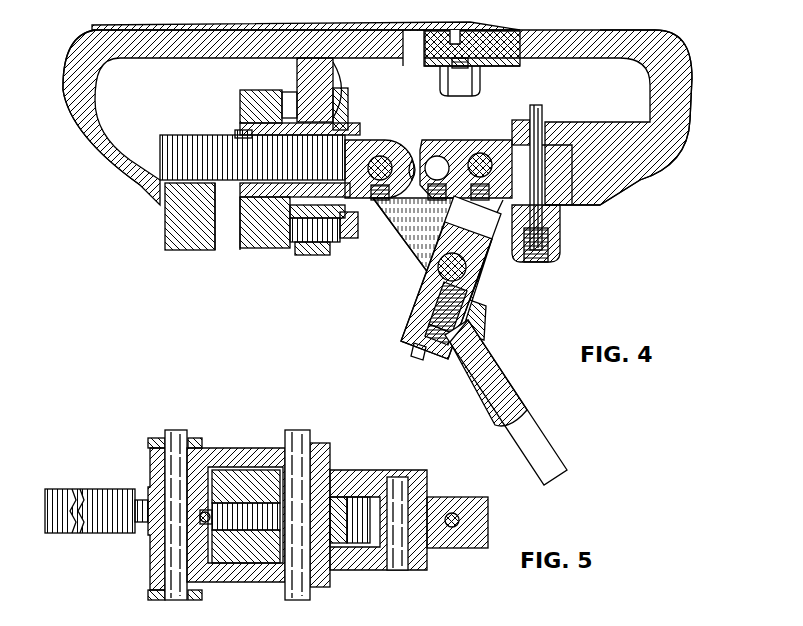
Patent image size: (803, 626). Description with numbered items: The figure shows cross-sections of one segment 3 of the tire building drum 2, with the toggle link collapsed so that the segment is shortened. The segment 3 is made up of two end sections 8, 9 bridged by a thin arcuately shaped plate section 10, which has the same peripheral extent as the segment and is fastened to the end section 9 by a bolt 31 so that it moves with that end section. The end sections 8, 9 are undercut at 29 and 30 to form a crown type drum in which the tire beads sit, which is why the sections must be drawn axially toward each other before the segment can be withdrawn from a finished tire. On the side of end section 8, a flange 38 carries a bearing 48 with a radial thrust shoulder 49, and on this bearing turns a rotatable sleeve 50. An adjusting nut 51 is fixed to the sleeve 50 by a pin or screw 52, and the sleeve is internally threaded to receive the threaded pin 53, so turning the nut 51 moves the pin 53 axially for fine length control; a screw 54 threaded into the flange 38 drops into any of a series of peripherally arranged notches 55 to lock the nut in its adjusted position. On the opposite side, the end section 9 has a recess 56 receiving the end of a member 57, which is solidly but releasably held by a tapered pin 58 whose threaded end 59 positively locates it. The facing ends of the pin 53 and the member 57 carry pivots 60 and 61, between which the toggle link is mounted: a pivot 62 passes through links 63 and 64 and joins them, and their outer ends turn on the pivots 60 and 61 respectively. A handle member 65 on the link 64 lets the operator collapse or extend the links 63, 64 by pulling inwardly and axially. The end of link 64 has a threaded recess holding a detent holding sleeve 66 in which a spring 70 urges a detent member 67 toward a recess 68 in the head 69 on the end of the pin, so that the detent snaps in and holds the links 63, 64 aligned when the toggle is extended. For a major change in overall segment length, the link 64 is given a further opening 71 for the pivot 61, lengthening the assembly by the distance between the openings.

In FIG. 4, the tire building drum 2 is at (556, 24).
In FIG. 4, the drum segment 3 is at (640, 49).
In FIG. 4, the end section 8 is at (80, 136).
In FIG. 4, the end section 9 is at (676, 131).
In FIG. 4, the plate section 10 is at (262, 29).
In FIG. 4, the undercut 29 is at (166, 200).
In FIG. 4, the undercut 30 is at (613, 196).
In FIG. 4, the bolt 31 is at (452, 31).
In FIG. 4, the flange 38 is at (300, 73).
In FIG. 4, the bearing 48 is at (338, 82).
In FIG. 4, the radial thrust shoulder 49 is at (345, 110).
In FIG. 4, the rotatable sleeve 50 is at (226, 215).
In FIG. 4, the adjusting nut 51 is at (242, 96).
In FIG. 4, the pin or screw 52 is at (237, 133).
In FIG. 4, the threaded pin 53 is at (170, 150).
In FIG. 5, the threaded pin 53 is at (60, 495).
In FIG. 4, the screw 54 is at (306, 256).
In FIG. 4, the notches 55 is at (282, 95).
In FIG. 4, the recess 56 is at (553, 140).
In FIG. 4, the member 57 is at (568, 203).
In FIG. 5, the member 57 is at (462, 500).
In FIG. 4, the tapered pin 58 is at (534, 106).
In FIG. 5, the tapered pin 58 is at (453, 528).
In FIG. 4, the threaded end 59 is at (536, 263).
In FIG. 4, the pivot 60 is at (383, 158).
In FIG. 5, the pivot 60 is at (172, 598).
In FIG. 4, the pivot 61 is at (480, 155).
In FIG. 5, the pivot 61 is at (398, 570).
In FIG. 4, the pivot 62 is at (470, 284).
In FIG. 5, the pivot 62 is at (296, 447).
In FIG. 4, the link 63 is at (404, 224).
In FIG. 5, the link 63 is at (225, 455).
In FIG. 4, the link 64 is at (424, 282).
In FIG. 5, the link 64 is at (345, 474).
In FIG. 4, the handle member 65 is at (540, 440).
In FIG. 4, the detent holding sleeve 66 is at (427, 330).
In FIG. 5, the detent holding sleeve 66 is at (242, 518).
In FIG. 4, the detent member 67 is at (420, 358).
In FIG. 5, the detent member 67 is at (206, 524).
In FIG. 4, the recess 68 is at (413, 162).
In FIG. 5, the recess 68 is at (200, 515).
In FIG. 4, the head 69 is at (367, 148).
In FIG. 5, the head 69 is at (150, 478).
In FIG. 4, the spring 70 is at (431, 313).
In FIG. 4, the opening 71 is at (437, 157).
In FIG. 5, the opening 71 is at (360, 547).